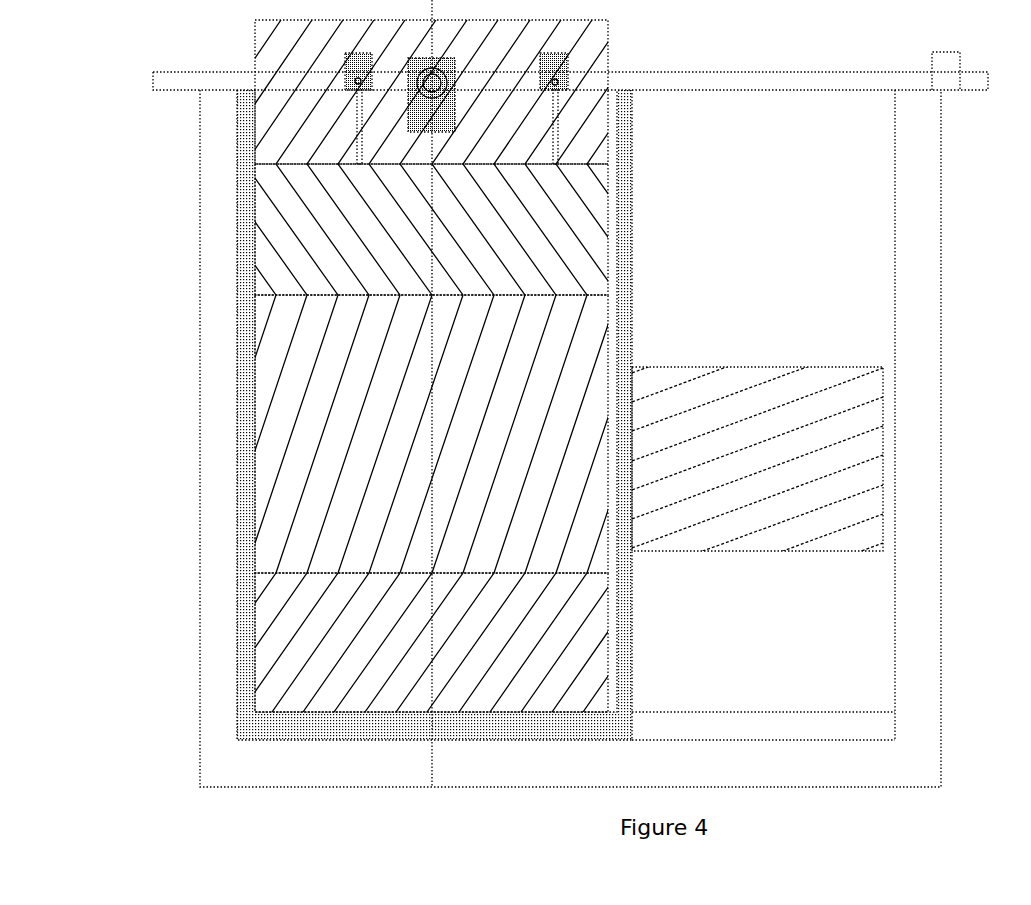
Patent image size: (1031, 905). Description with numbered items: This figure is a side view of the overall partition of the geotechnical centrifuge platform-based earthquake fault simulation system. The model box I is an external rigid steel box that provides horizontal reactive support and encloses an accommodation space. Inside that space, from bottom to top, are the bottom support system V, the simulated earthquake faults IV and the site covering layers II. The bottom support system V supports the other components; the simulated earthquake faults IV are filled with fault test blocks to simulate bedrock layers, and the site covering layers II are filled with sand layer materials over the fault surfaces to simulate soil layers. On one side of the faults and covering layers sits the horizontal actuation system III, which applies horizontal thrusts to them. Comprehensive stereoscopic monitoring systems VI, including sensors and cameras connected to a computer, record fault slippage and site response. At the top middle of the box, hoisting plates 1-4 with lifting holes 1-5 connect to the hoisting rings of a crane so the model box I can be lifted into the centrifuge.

The model box I is at (245, 312).
The site covering layers II is at (328, 233).
The horizontal actuation system III is at (807, 455).
The simulated earthquake faults IV is at (330, 400).
The bottom support system V is at (312, 647).
The comprehensive stereoscopic monitoring systems VI is at (307, 93).
The hoisting plates 1-4 is at (456, 103).
The lifting holes 1-5 is at (430, 137).